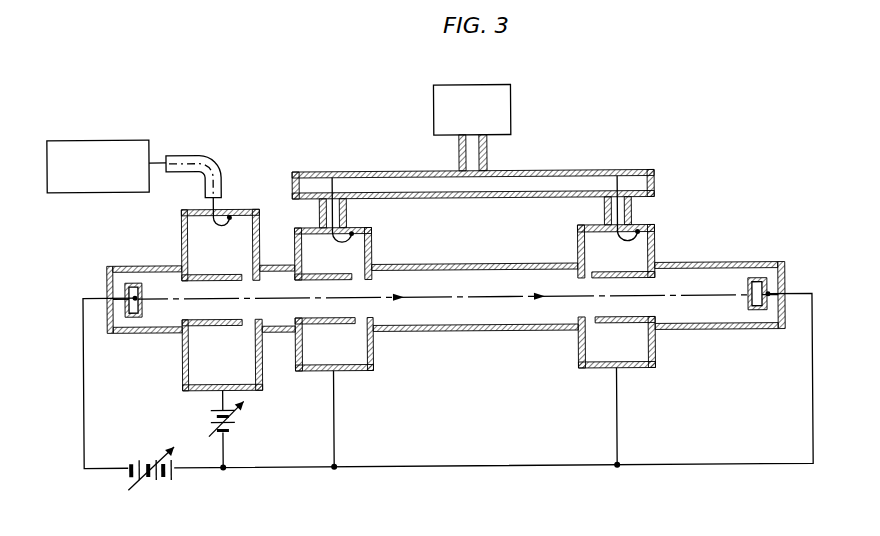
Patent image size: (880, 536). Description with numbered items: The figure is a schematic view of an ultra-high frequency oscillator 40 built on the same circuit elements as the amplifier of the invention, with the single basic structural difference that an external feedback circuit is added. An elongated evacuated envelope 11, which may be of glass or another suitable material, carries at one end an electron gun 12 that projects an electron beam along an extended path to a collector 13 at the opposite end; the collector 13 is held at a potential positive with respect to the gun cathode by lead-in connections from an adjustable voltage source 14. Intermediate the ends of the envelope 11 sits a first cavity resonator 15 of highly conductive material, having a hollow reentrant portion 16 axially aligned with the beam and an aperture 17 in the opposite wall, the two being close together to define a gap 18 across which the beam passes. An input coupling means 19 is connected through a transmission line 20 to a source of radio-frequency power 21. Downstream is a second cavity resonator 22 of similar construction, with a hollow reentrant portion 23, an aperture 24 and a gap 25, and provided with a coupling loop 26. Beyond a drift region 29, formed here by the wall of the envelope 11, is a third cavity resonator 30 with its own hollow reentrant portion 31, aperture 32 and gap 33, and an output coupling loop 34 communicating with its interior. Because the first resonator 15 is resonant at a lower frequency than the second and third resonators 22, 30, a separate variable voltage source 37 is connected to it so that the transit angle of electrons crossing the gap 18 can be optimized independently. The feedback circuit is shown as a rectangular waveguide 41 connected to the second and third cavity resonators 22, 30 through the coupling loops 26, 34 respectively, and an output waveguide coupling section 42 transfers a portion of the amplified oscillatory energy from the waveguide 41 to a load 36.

The evacuated envelope 11 is at (142, 264).
The electron gun 12 is at (132, 315).
The collector 13 is at (756, 312).
The adjustable voltage source 14 is at (152, 479).
The first cavity resonator 15 is at (261, 222).
The hollow reentrant portion 16 is at (219, 324).
The aperture 17 is at (253, 307).
The gap 18 is at (245, 276).
The input coupling means 19 is at (222, 224).
The transmission line 20 is at (223, 183).
The source of radio-frequency power 21 is at (88, 190).
The second cavity resonator 22 is at (373, 245).
The hollow reentrant portion 23 is at (330, 323).
The aperture 24 is at (370, 305).
The gap 25 is at (360, 274).
The coupling loop 26 is at (342, 242).
The drift region 29 is at (498, 280).
The third cavity resonator 30 is at (656, 234).
The hollow reentrant portion 31 is at (625, 324).
The aperture 32 is at (652, 306).
The gap 33 is at (592, 277).
The output coupling loop 34 is at (626, 241).
The load 36 is at (512, 96).
The variable voltage source 37 is at (230, 420).
The ultra-high frequency oscillator 40 is at (457, 370).
The rectangular waveguide 41 is at (552, 170).
The output waveguide coupling section 42 is at (489, 154).